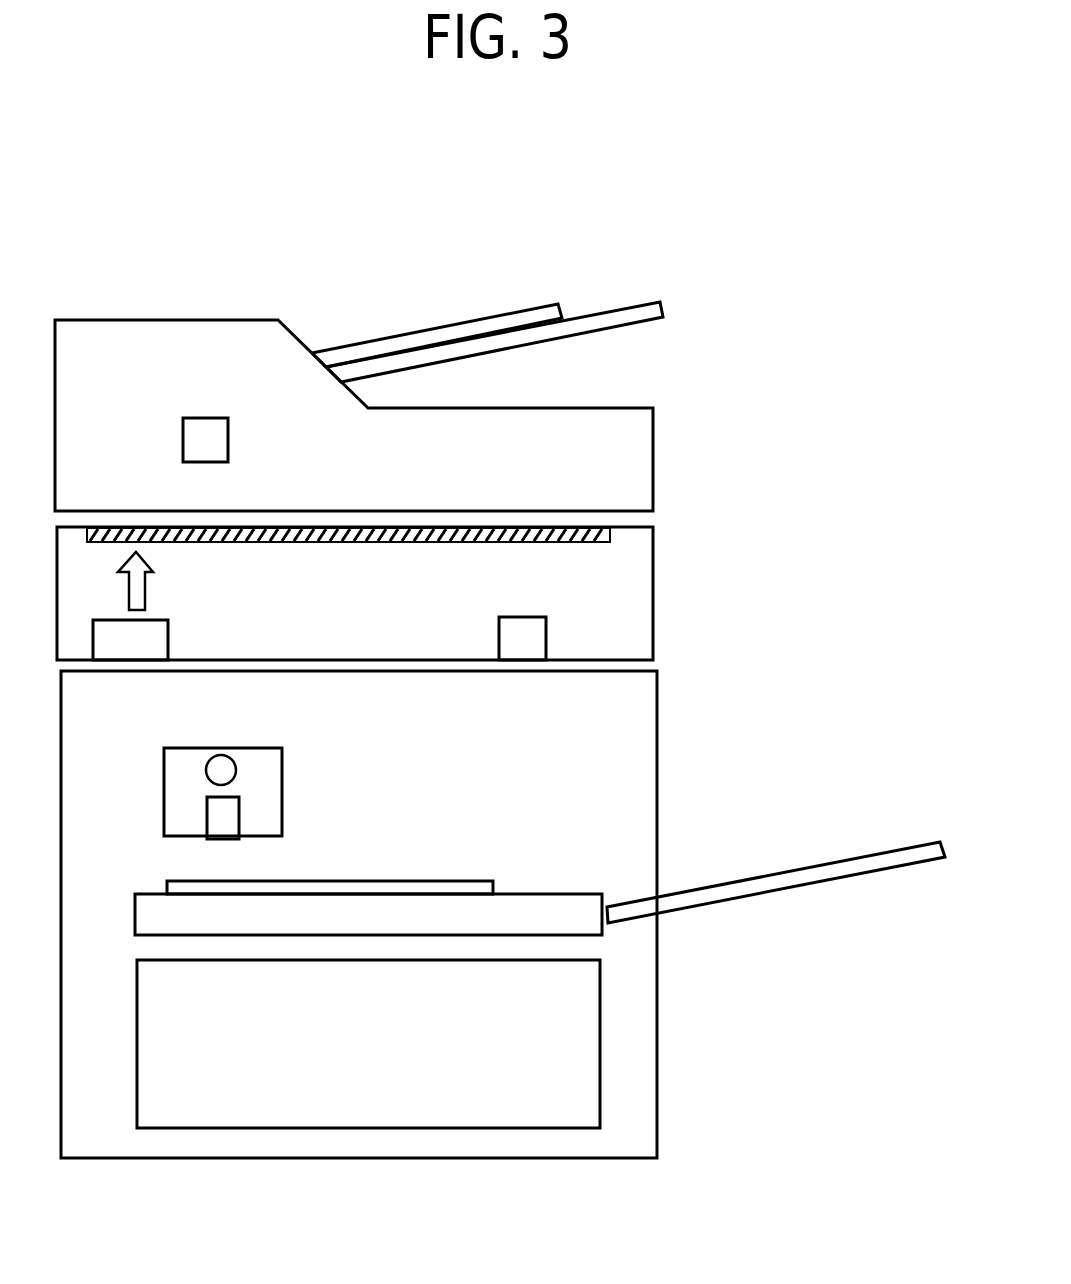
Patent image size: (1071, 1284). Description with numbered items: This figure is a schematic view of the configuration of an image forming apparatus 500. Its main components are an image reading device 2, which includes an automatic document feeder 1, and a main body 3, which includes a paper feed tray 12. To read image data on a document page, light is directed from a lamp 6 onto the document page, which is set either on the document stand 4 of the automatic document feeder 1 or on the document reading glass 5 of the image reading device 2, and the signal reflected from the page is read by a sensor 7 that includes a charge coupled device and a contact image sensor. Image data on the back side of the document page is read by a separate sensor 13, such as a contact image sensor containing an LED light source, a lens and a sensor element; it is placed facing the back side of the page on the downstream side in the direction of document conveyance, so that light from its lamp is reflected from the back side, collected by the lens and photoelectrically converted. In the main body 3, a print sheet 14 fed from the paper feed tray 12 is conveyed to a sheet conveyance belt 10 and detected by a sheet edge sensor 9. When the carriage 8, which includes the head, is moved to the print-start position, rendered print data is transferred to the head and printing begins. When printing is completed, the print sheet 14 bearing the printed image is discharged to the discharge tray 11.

The image forming apparatus 500 is at (782, 222).
The automatic document feeder 1 is at (653, 457).
The image reading device 2 is at (653, 588).
The main body 3 is at (657, 743).
The document stand 4 is at (660, 298).
The document reading glass 5 is at (418, 527).
The lamp 6 is at (168, 635).
The sensor 7 is at (523, 617).
The carriage 8 is at (282, 757).
The sheet edge sensor 9 is at (239, 813).
The sheet conveyance belt 10 is at (560, 893).
The discharge tray 11 is at (897, 847).
The paper feed tray 12 is at (600, 1038).
The sensor 13 is at (228, 440).
The print sheet 14 is at (448, 880).